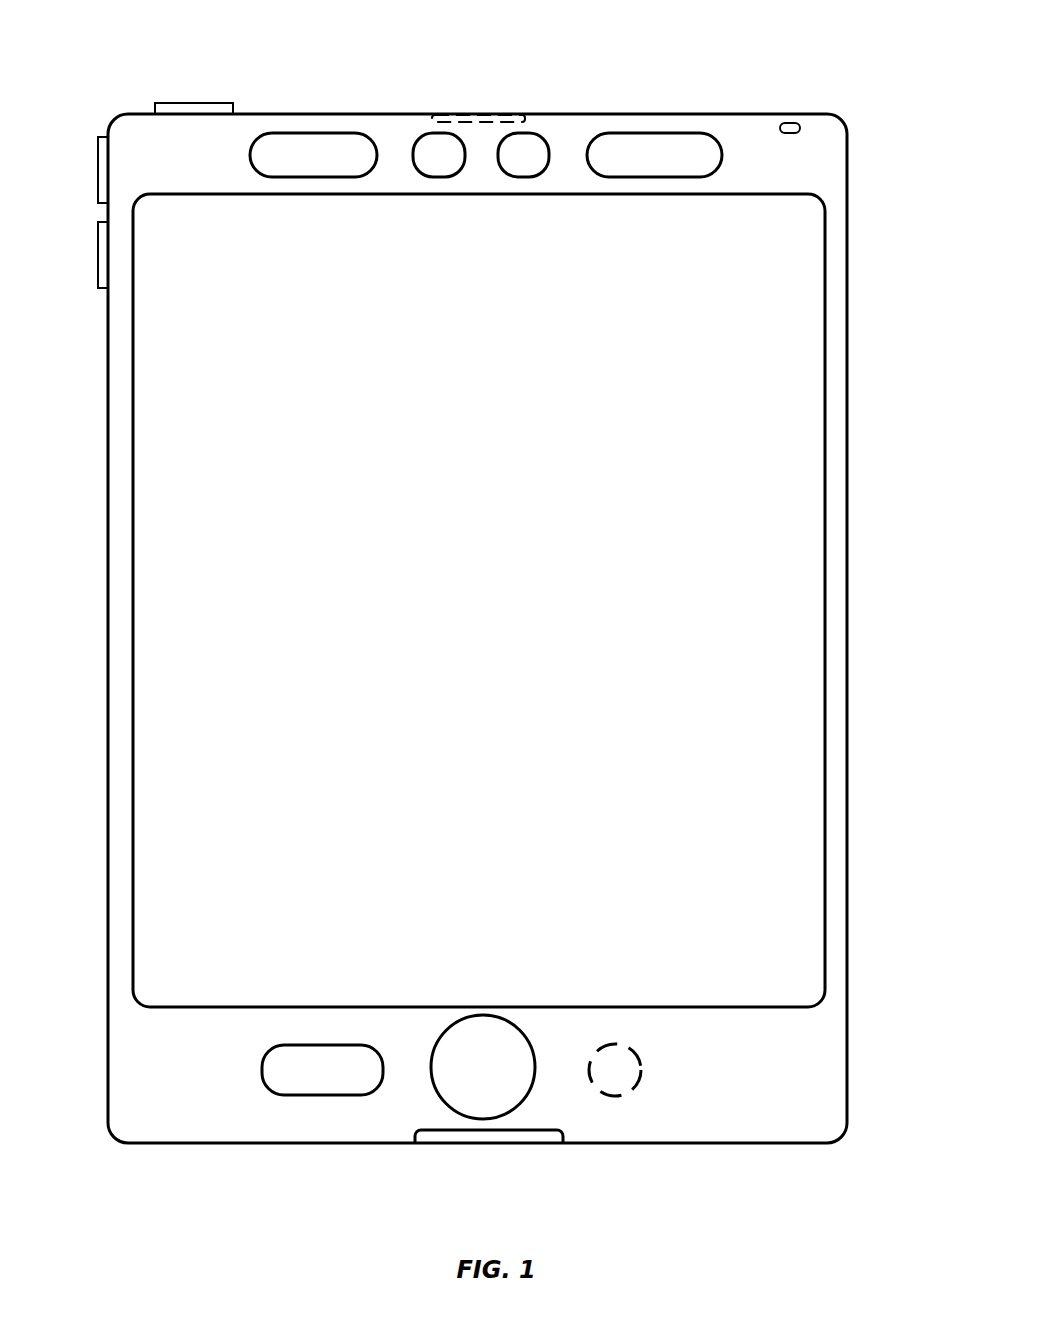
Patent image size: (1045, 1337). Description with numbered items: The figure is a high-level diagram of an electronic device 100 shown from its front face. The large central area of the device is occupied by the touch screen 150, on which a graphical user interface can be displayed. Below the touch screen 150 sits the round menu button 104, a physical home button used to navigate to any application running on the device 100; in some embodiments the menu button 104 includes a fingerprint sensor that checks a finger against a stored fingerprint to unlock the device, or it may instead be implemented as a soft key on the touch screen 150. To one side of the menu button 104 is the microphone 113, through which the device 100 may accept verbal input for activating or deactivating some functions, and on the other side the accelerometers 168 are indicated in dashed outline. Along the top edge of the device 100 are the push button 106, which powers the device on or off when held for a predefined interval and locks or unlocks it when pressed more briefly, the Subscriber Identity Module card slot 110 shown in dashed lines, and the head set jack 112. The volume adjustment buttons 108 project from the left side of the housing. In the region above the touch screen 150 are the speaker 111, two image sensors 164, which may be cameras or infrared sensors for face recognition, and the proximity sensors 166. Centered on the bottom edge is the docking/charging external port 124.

The electronic device 100 is at (888, 108).
The menu button 104 is at (483, 1067).
The push button 106 is at (193, 103).
The volume adjustment buttons 108 is at (98, 168).
The Subscriber Identity Module (SIM) card slot 110 is at (485, 115).
The speaker 111 is at (297, 165).
The head set jack 112 is at (788, 123).
The microphone 113 is at (306, 1080).
The docking/charging external port 124 is at (490, 1144).
The touch screen 150 is at (825, 494).
The image sensors 164 is at (423, 165).
The proximity sensors 166 is at (638, 165).
The accelerometers 168 is at (599, 1081).